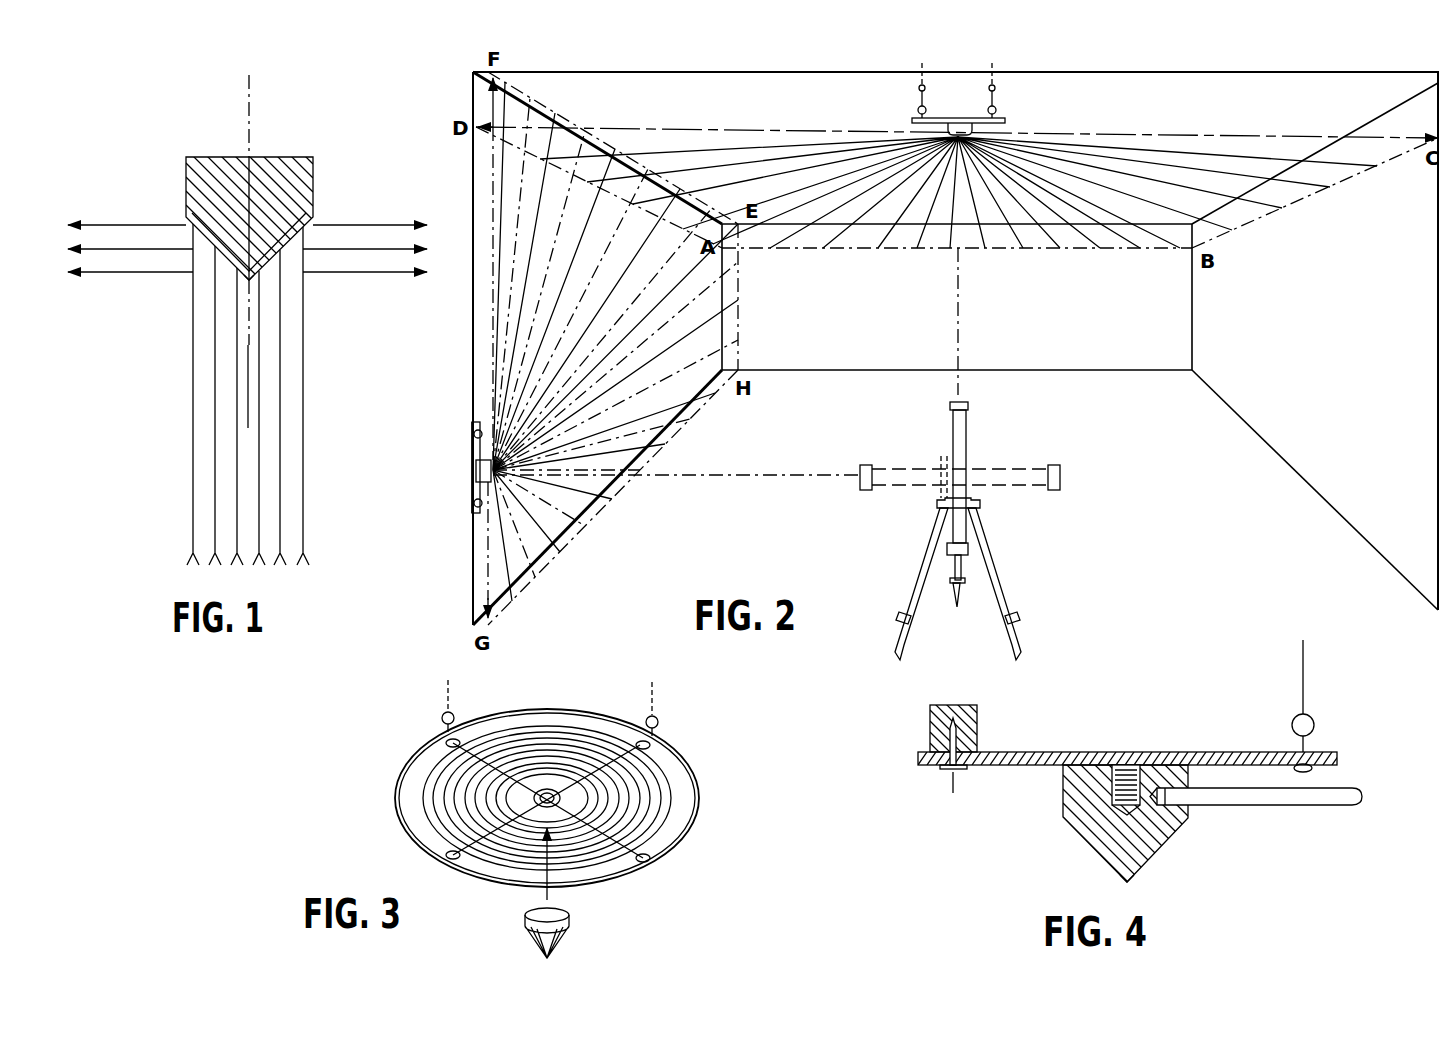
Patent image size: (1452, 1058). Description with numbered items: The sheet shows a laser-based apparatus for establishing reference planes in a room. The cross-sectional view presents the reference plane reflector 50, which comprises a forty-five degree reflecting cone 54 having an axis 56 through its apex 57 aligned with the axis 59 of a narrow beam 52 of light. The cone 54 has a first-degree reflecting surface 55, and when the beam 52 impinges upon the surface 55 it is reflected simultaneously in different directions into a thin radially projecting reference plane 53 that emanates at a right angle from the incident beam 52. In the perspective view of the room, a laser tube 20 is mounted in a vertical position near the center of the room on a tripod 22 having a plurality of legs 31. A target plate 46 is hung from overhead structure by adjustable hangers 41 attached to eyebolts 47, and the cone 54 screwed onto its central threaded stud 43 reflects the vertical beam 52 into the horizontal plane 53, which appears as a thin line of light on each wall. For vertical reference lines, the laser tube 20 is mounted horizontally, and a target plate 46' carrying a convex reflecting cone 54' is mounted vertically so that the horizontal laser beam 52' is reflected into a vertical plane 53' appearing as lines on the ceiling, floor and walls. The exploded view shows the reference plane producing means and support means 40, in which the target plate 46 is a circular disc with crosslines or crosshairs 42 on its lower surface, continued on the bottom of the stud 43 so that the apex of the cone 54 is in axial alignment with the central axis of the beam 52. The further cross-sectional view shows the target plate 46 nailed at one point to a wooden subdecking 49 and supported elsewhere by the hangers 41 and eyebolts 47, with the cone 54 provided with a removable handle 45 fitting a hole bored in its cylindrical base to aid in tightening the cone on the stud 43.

In FIG. 2, the laser tube 20 is at (968, 432).
In FIG. 2, the tripod 22 is at (975, 579).
In FIG. 2, the legs 31 is at (935, 530).
In FIG. 3, the target disc assembly 40 is at (531, 799).
In FIG. 2, the adjustable hangers 41 is at (918, 99).
In FIG. 3, the adjustable hangers 41 is at (444, 695).
In FIG. 4, the adjustable hangers 41 is at (1298, 702).
In FIG. 3, the crosslines or crosshairs 42 is at (625, 760).
In FIG. 3, the central threaded stud 43 is at (540, 810).
In FIG. 4, the central threaded stud 43 is at (1112, 792).
In FIG. 4, the removable handle 45 is at (1268, 806).
In FIG. 2, the target plate 46 is at (990, 118).
In FIG. 3, the target plate 46 is at (579, 798).
In FIG. 4, the target plate 46 is at (1129, 784).
In FIG. 3, the eyebolts 47 is at (456, 718).
In FIG. 4, the eyebolts 47 is at (1312, 748).
In FIG. 4, the wooden subdecking 49 is at (975, 722).
In FIG. 1, the reference plane reflector 50 is at (276, 219).
In FIG. 1, the laser beam 52 is at (277, 394).
In FIG. 2, the laser beam 52 is at (991, 321).
In FIG. 1, the reference plane 53 is at (247, 274).
In FIG. 2, the reference plane 53 is at (958, 229).
In FIG. 1, the reflecting cone 54 is at (276, 219).
In FIG. 2, the reflecting cone 54 is at (905, 121).
In FIG. 3, the reflecting cone 54 is at (574, 934).
In FIG. 4, the reflecting cone 54 is at (1113, 809).
In FIG. 1, the reflecting surface 55 is at (310, 220).
In FIG. 1, the axis 56 is at (250, 118).
In FIG. 1, the apex 57 is at (253, 274).
In FIG. 4, the apex 57 is at (1132, 884).
In FIG. 1, the axis 59 is at (250, 391).
In FIG. 2, the horizontal laser beam 52' is at (675, 453).
In FIG. 2, the vertical plane 53' is at (641, 341).
In FIG. 2, the convex reflecting cone 54' is at (455, 467).
In FIG. 2, the target plate 46' is at (444, 484).